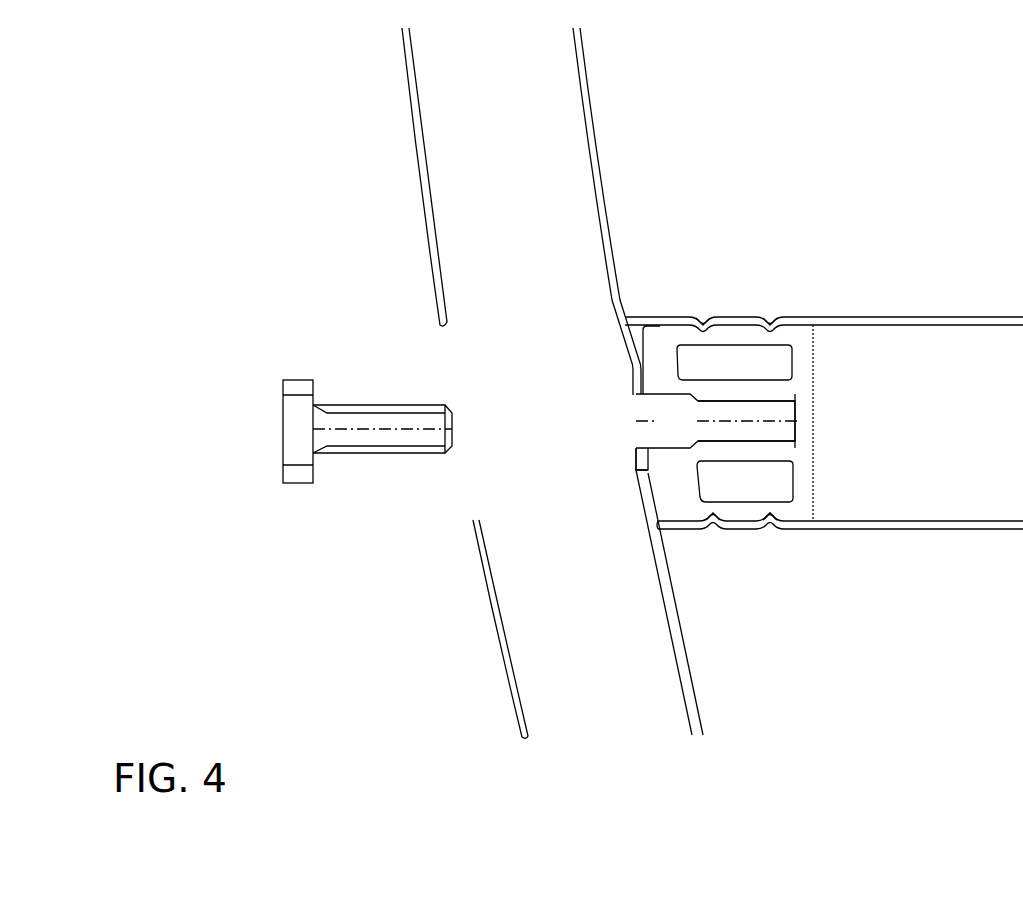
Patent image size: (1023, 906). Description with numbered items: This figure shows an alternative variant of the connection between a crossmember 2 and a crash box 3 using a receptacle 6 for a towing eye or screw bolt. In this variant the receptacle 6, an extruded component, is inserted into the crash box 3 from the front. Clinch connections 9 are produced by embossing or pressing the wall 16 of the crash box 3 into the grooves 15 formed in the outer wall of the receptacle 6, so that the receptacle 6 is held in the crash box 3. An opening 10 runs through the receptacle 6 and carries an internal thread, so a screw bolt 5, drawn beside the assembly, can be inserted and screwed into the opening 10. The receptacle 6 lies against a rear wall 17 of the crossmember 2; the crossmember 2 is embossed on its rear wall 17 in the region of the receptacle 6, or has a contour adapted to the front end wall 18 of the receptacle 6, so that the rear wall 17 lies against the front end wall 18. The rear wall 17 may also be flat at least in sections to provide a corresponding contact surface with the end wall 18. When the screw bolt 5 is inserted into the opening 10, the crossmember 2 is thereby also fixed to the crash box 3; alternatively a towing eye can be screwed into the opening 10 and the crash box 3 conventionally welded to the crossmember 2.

The crossmember 2 is at (597, 173).
The crash box 3 is at (878, 312).
The screw bolt 5 is at (342, 413).
The receptacle 6 is at (668, 343).
The clinch connections 9 is at (701, 311).
The opening 10 is at (657, 433).
The grooves 15 is at (772, 517).
The wall 16 is at (800, 323).
The rear wall 17 is at (660, 552).
The front end wall 18 is at (643, 472).